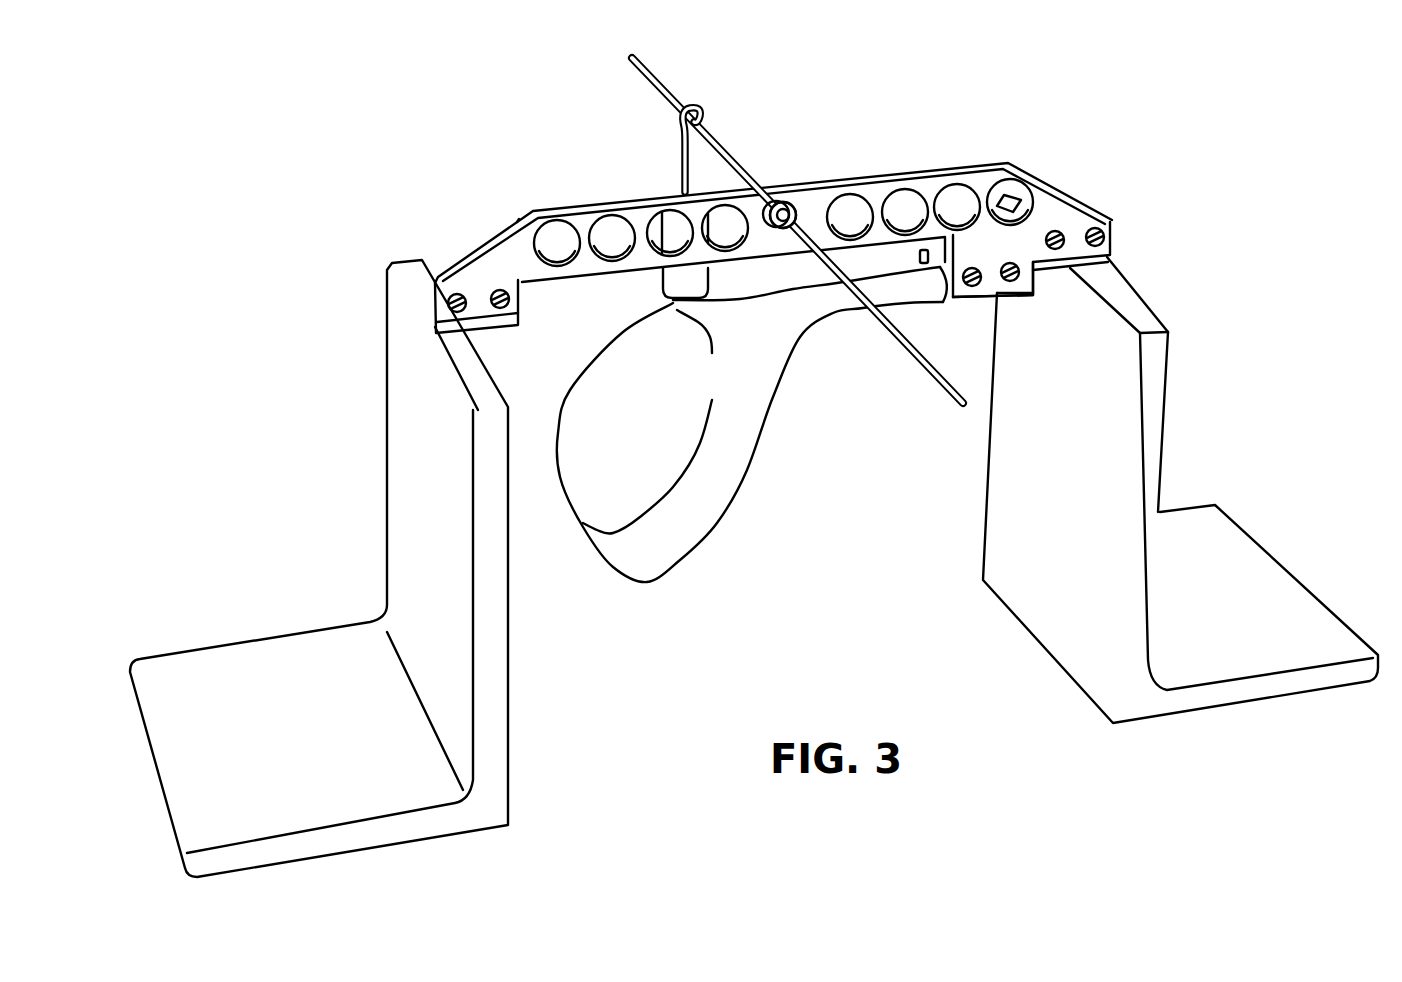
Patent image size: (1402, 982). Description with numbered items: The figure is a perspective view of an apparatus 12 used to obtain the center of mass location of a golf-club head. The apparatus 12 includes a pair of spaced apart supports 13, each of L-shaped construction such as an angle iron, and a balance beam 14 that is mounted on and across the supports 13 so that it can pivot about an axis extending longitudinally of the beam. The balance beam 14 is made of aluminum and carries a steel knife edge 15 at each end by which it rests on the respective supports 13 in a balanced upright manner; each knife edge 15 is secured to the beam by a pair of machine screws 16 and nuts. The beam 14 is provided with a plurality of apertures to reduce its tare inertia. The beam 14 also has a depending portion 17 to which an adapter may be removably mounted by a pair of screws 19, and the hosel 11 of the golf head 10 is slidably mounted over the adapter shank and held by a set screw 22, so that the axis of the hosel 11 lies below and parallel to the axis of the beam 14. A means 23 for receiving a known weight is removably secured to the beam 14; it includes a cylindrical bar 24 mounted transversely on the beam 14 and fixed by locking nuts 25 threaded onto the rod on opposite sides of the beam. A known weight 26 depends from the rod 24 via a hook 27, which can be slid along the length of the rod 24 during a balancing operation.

The golf head 10 is at (741, 490).
The hosel 11 is at (908, 298).
The apparatus 12 is at (348, 259).
The supports 13 is at (390, 446).
The balance beam 14 is at (580, 212).
The knife edge 15 is at (485, 328).
The machine screws 16 is at (500, 288).
The depending portion 17 is at (990, 287).
The screws 19 is at (1014, 263).
The set screw 22 is at (920, 256).
The means for receiving a known weight 23 is at (733, 143).
The cylindrical bar 24 is at (663, 85).
The locking nuts 25 is at (784, 204).
The known weight 26 is at (663, 284).
The hook 27 is at (682, 152).